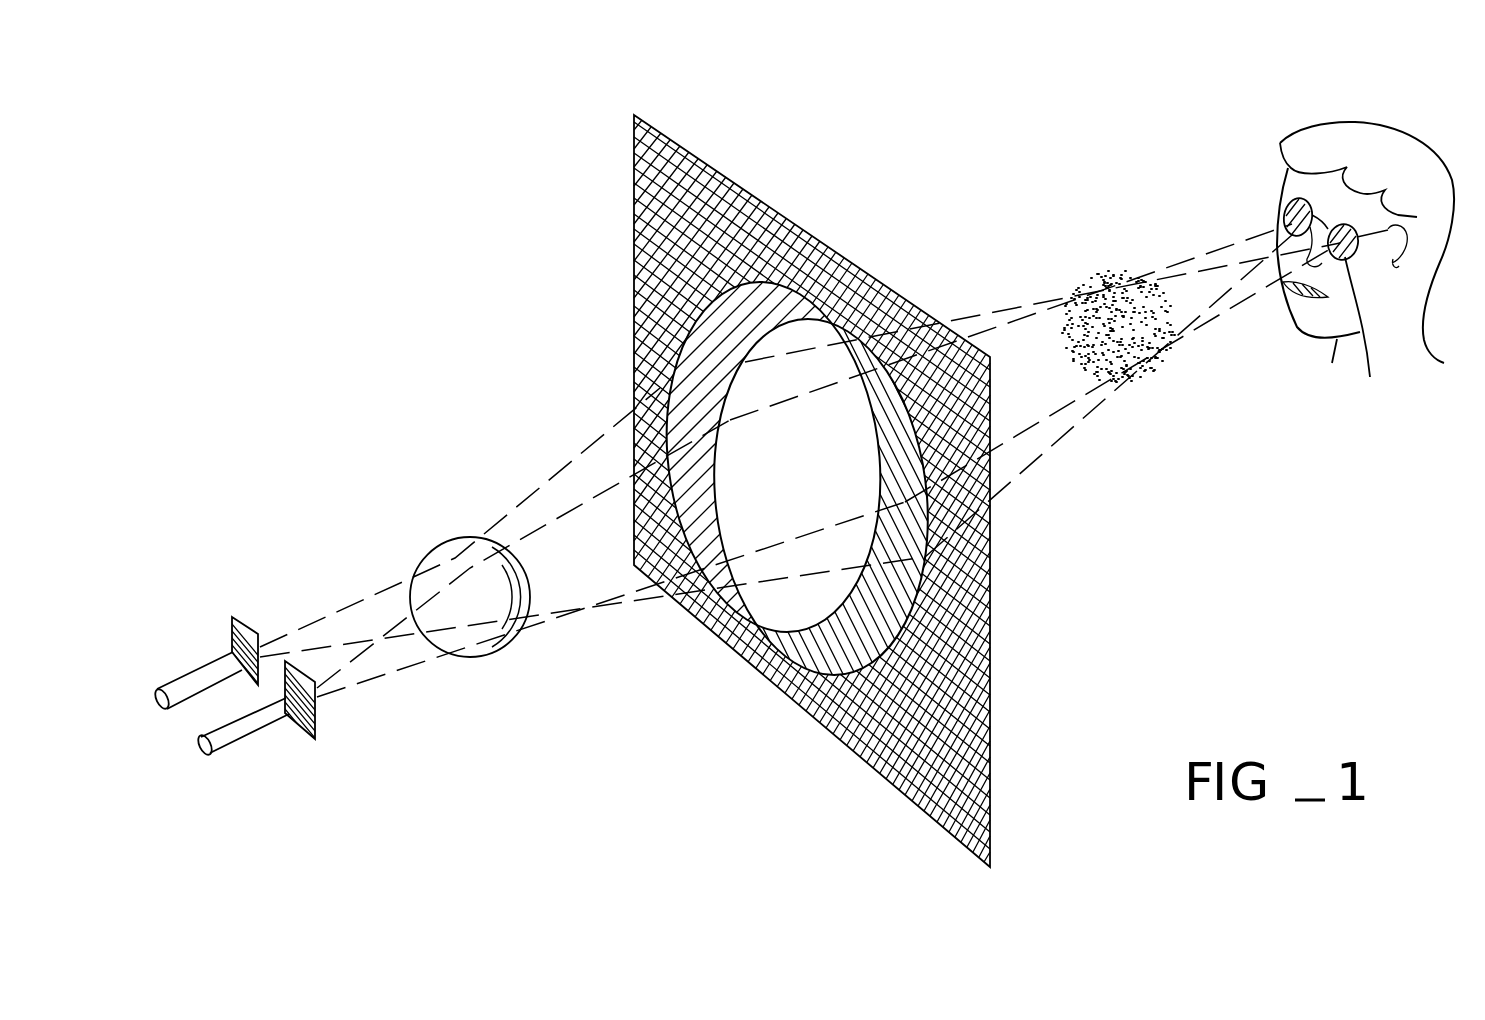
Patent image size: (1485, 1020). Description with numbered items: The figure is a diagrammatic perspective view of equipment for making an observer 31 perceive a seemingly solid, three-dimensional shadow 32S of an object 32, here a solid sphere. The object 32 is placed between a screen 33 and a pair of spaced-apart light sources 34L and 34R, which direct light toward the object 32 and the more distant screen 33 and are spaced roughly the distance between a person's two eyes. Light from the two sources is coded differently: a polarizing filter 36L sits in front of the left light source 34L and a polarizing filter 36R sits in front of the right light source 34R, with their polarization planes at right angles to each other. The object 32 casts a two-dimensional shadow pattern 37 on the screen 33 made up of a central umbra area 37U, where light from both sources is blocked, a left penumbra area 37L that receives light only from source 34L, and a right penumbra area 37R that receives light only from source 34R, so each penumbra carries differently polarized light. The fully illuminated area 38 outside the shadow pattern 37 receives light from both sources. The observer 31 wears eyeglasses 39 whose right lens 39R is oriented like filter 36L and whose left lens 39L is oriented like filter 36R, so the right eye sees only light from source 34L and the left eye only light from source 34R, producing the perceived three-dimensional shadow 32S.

The observer 31 is at (1383, 133).
The object 32 is at (431, 553).
The three-dimensional shadow 32S is at (1103, 278).
The screen 33 is at (712, 158).
The left light source 34L is at (194, 672).
The right light source 34R is at (245, 730).
The left polarizing filter 36L is at (245, 628).
The right polarizing filter 36R is at (318, 714).
The shadow pattern 37 is at (797, 666).
The left penumbra area 37L is at (754, 346).
The right penumbra area 37R is at (871, 655).
The umbra area 37U is at (834, 492).
The fully illuminated area 38 is at (946, 733).
The eyeglasses 39 is at (1272, 217).
The right lens 39R is at (1290, 207).
The left lens 39L is at (1362, 323).